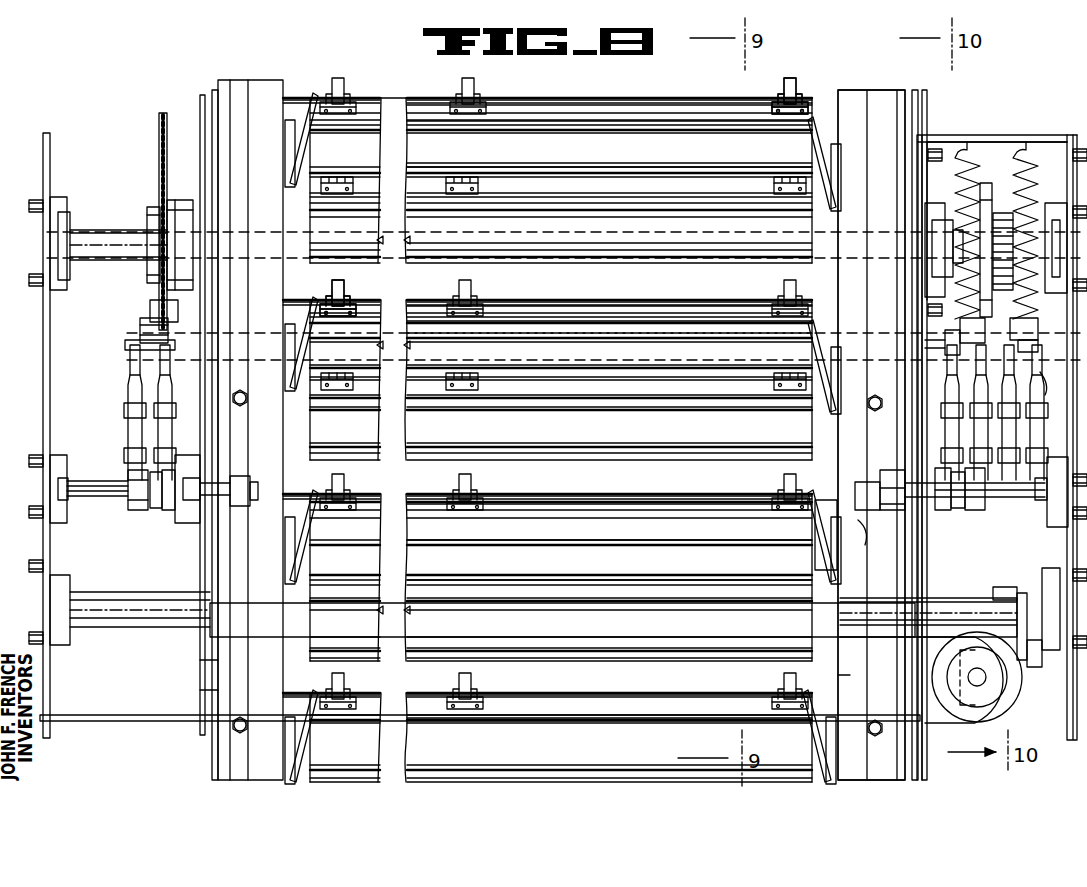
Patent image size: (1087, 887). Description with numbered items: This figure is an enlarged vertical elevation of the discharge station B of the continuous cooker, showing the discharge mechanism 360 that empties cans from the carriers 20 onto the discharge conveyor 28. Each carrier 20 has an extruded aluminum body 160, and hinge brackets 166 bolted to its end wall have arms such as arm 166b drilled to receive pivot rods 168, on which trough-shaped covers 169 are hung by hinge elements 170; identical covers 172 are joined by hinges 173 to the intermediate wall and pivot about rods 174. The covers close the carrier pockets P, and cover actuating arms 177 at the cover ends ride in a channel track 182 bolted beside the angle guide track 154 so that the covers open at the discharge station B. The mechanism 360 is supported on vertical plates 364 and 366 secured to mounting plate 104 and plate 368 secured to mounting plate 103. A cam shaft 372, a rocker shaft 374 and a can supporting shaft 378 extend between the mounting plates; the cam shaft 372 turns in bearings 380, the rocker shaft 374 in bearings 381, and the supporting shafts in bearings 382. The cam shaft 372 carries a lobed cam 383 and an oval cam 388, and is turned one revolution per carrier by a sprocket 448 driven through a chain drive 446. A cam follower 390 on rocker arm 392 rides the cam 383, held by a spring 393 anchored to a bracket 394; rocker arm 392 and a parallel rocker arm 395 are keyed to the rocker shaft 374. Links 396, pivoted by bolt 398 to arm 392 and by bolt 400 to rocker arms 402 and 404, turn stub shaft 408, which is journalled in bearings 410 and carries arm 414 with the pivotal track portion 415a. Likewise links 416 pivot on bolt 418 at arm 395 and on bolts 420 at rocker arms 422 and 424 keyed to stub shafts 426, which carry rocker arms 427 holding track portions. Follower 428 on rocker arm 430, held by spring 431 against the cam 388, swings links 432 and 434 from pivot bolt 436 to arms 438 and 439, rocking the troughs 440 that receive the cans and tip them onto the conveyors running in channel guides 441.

The carrier 20 is at (601, 98).
The discharge conveyor 28 is at (80, 715).
The mounting plate 103 is at (915, 90).
The mounting plate 104 is at (205, 100).
The angle guide track 154 is at (225, 672).
The body 160 is at (547, 440).
The hinge bracket 166 is at (466, 84).
The arm of hinge bracket 166b is at (780, 88).
The pivot rod 168 is at (503, 99).
The cover 169 is at (493, 126).
The hinge element 170 is at (785, 113).
The cover 172 is at (440, 193).
The hinge 173 is at (790, 198).
The rod 174 is at (623, 173).
The cover actuating arm 177 is at (306, 160).
The channel track 182 is at (275, 92).
The discharge mechanism 360 is at (1018, 85).
The plate 364 is at (50, 137).
The plate 366 is at (202, 135).
The plate 368 is at (918, 140).
The cam shaft 372 is at (72, 232).
The rocker shaft 374 is at (713, 341).
The can supporting shaft 378 is at (137, 596).
The bearing 380 is at (69, 230).
The bearing 381 is at (165, 320).
The bearing 382 is at (68, 585).
The cam 383 is at (984, 181).
The cam 388 is at (1063, 180).
The cam follower 390 is at (985, 326).
The rocker arm 392 is at (925, 346).
The spring 393 is at (958, 160).
The bracket 394 is at (1005, 140).
The rocker arm 395 is at (142, 328).
The link 396 is at (985, 433).
The bolt 398 is at (945, 346).
The bolt 400 is at (976, 512).
The rocker arm 402 is at (941, 512).
The rocker arm 404 is at (958, 510).
The stub shaft 408 is at (896, 489).
The bearing 410 is at (898, 529).
The arm 414 is at (866, 510).
The track portion 415a is at (835, 554).
The link 416 is at (162, 423).
The bolt 418 is at (128, 345).
The bolt 420 is at (128, 498).
The rocker arm 422 is at (145, 505).
The rocker arm 424 is at (160, 508).
The stub shaft 426 is at (85, 485).
The rocker arm 427 is at (250, 490).
The cam follower 428 is at (1025, 341).
The rocker arm 430 is at (1025, 351).
The spring 431 is at (1018, 191).
The link 432 is at (995, 595).
The link 434 is at (1037, 580).
The pivot bolt 436 is at (1045, 393).
The arm 438 is at (998, 701).
The arm 439 is at (1022, 680).
The trough 440 is at (616, 580).
The channel guide 441 is at (562, 620).
The chain drive 446 is at (175, 113).
The sprocket 448 is at (150, 270).
The carrier pocket P is at (693, 185).
The discharge station B is at (998, 85).